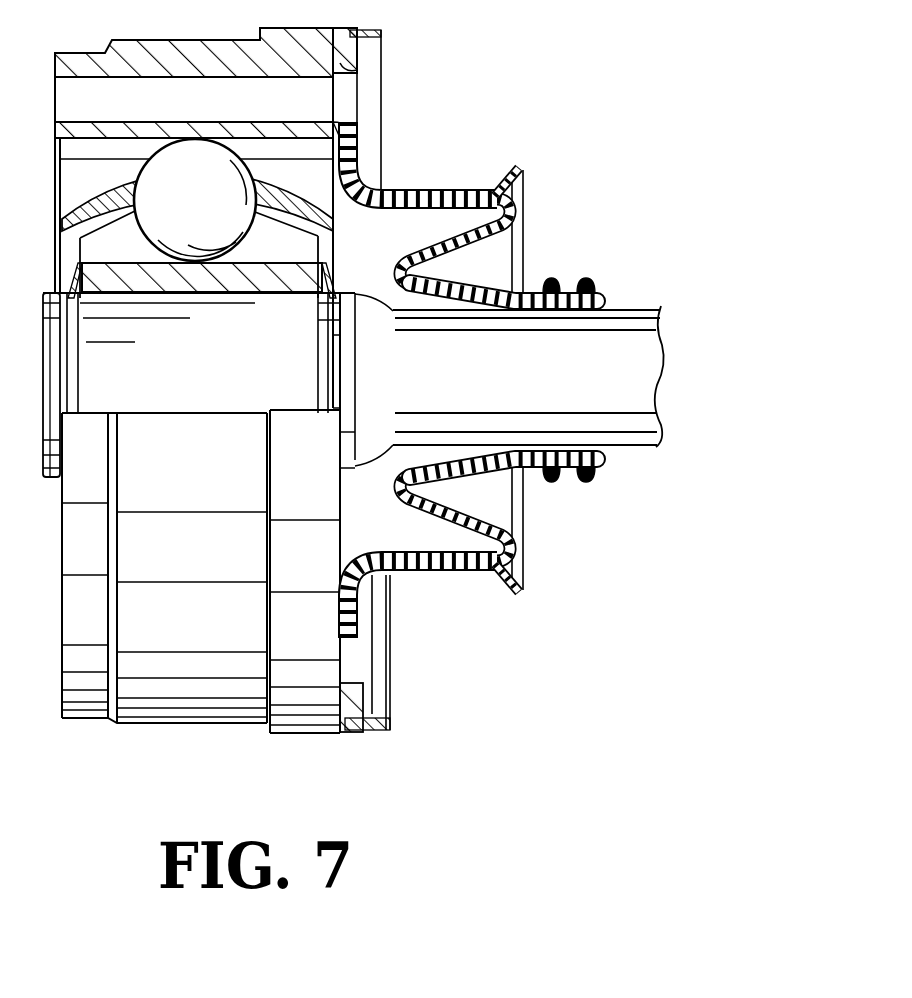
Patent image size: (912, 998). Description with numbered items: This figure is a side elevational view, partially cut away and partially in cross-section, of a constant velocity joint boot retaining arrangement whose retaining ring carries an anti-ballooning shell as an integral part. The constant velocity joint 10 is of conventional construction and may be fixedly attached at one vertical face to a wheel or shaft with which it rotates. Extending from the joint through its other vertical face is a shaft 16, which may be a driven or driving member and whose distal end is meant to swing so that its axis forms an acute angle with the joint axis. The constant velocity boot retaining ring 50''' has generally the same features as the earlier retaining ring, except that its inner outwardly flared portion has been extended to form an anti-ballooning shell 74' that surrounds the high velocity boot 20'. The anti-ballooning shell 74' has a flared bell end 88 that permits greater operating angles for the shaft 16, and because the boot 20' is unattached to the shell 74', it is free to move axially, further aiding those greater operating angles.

The constant velocity joint 10 is at (193, 667).
The shaft 16 is at (643, 333).
The high velocity boot 20' is at (503, 368).
The anti-ballooning shell 74' is at (433, 151).
The flared bell end 88 is at (510, 577).
The constant velocity boot retaining ring 50''' is at (416, 380).